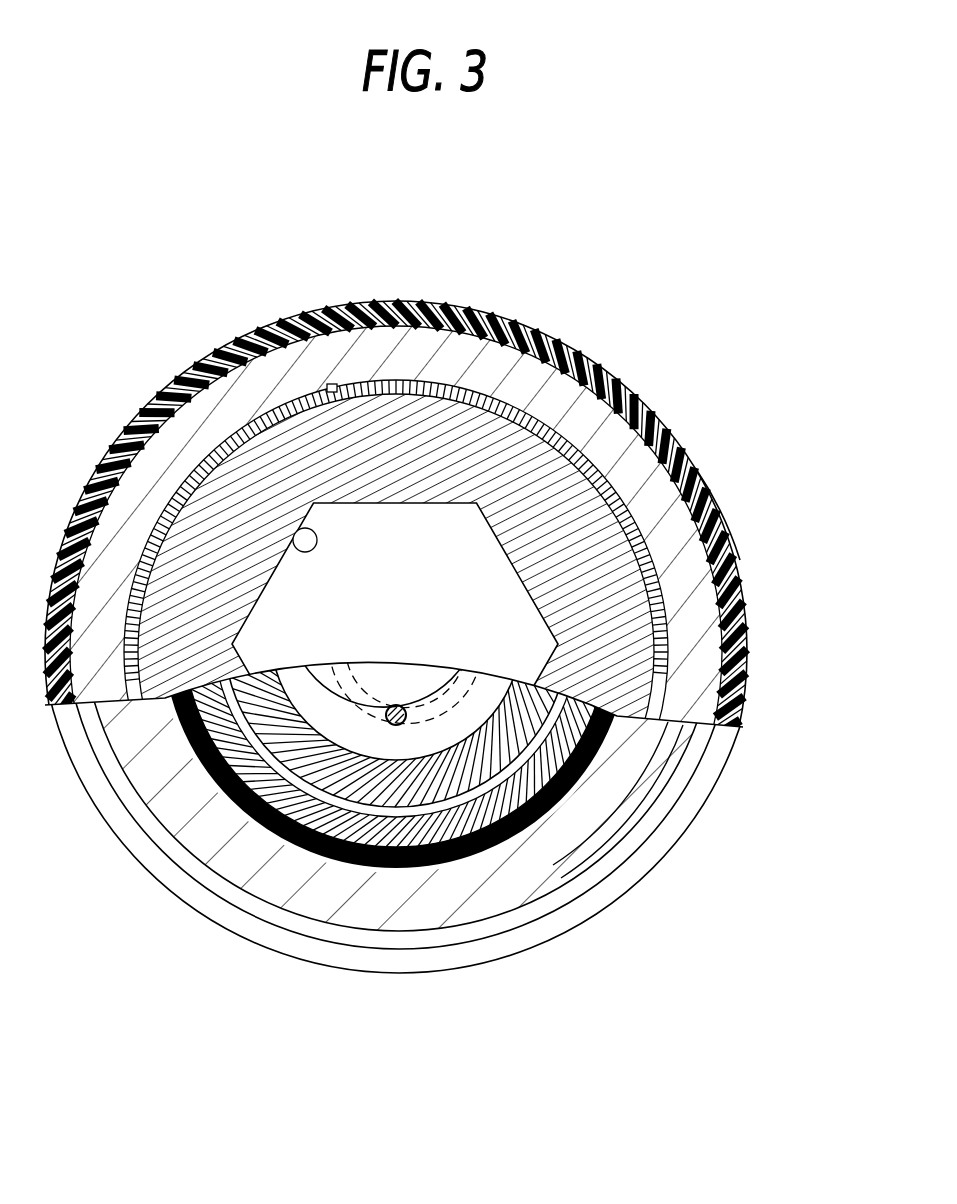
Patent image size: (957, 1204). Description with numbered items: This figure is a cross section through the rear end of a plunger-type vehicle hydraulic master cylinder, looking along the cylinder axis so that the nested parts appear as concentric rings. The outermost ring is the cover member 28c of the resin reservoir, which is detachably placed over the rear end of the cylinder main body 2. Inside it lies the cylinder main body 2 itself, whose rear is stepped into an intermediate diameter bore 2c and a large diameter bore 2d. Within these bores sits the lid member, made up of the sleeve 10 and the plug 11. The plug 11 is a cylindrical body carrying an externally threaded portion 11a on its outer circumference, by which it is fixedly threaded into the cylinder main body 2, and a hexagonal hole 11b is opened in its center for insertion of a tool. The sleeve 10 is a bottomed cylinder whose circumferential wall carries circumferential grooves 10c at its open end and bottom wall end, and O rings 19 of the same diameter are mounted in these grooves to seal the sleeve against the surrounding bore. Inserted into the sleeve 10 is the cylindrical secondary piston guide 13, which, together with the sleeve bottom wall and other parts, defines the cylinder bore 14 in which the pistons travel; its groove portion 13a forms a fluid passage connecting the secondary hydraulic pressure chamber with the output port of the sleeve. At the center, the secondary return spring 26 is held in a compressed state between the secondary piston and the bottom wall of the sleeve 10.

The cylinder main body 2 is at (522, 330).
The intermediate diameter bore 2c is at (533, 866).
The large diameter bore 2d is at (333, 390).
The sleeve 10 is at (325, 823).
The circumferential groove 10c is at (183, 908).
The plug 11 is at (617, 378).
The externally threaded portion 11a is at (697, 468).
The hexagonal hole 11b is at (207, 453).
The secondary piston guide 13 is at (497, 742).
The groove portion 13a is at (533, 713).
The cylinder bore 14 is at (318, 677).
The O ring 19 is at (422, 873).
The secondary return spring 26 is at (398, 705).
The cover member 28c is at (428, 308).